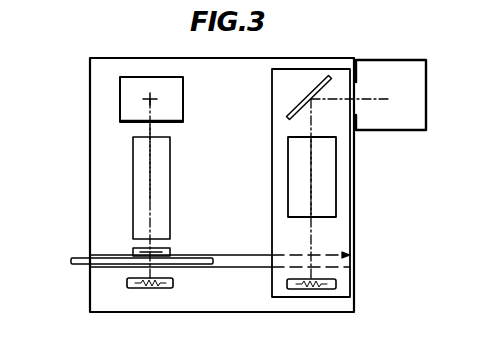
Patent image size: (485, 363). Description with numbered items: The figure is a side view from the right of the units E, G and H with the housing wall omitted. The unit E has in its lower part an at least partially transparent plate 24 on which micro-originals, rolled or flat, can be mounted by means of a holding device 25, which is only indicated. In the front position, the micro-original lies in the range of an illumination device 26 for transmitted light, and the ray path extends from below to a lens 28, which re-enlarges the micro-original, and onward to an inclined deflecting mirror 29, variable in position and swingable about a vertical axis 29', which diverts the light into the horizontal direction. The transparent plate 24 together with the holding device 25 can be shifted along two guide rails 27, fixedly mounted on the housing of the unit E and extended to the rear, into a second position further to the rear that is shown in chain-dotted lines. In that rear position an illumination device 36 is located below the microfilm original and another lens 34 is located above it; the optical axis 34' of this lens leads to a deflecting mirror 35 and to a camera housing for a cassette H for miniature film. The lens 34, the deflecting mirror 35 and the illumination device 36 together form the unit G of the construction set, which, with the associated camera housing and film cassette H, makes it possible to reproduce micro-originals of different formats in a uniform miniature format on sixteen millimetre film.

The unit E is at (88, 141).
The unit G is at (358, 168).
The cassette H is at (433, 72).
The transparent plate 24 is at (72, 259).
The holding device 25 is at (133, 251).
The illumination device 26 is at (141, 288).
The guide rails 27 is at (240, 262).
The lens 28 is at (137, 202).
The deflecting mirror 29 is at (116, 99).
The vertical axis 29' is at (184, 162).
The lens 34 is at (342, 180).
The optical axis 34' is at (269, 177).
The deflecting mirror 35 is at (318, 76).
The illumination device 36 is at (323, 290).